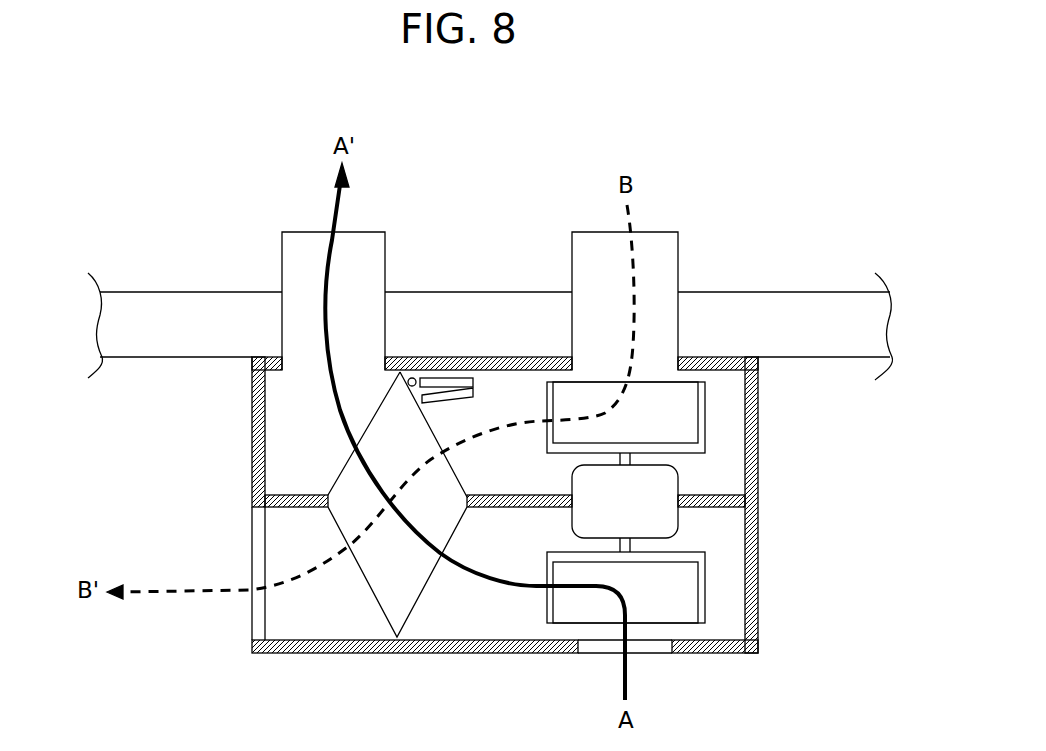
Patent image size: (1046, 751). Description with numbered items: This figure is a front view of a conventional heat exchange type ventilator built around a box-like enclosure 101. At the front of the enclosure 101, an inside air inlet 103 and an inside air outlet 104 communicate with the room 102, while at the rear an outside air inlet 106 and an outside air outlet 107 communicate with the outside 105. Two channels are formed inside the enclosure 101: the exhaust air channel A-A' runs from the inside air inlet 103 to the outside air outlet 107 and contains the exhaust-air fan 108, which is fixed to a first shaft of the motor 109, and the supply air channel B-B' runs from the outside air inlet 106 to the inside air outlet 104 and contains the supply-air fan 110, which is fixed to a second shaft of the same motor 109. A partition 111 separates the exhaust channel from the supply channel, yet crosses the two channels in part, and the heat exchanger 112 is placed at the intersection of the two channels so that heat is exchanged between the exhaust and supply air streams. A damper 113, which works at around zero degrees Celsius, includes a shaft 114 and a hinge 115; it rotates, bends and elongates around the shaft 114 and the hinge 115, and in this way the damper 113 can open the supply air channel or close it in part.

The box-like enclosure 101 is at (252, 483).
The room 102 is at (157, 637).
The inside air inlet 103 is at (658, 645).
The inside air outlet 104 is at (255, 615).
The outside 105 is at (505, 193).
The outside air inlet 106 is at (658, 243).
The outside air outlet 107 is at (308, 243).
The exhaust-air fan 108 is at (680, 583).
The motor 109 is at (665, 497).
The supply-air fan 110 is at (683, 422).
The partition 111 is at (488, 507).
The heat exchanger 112 is at (392, 565).
The damper 113 is at (407, 386).
The shaft 114 is at (414, 378).
The hinge 115 is at (460, 383).